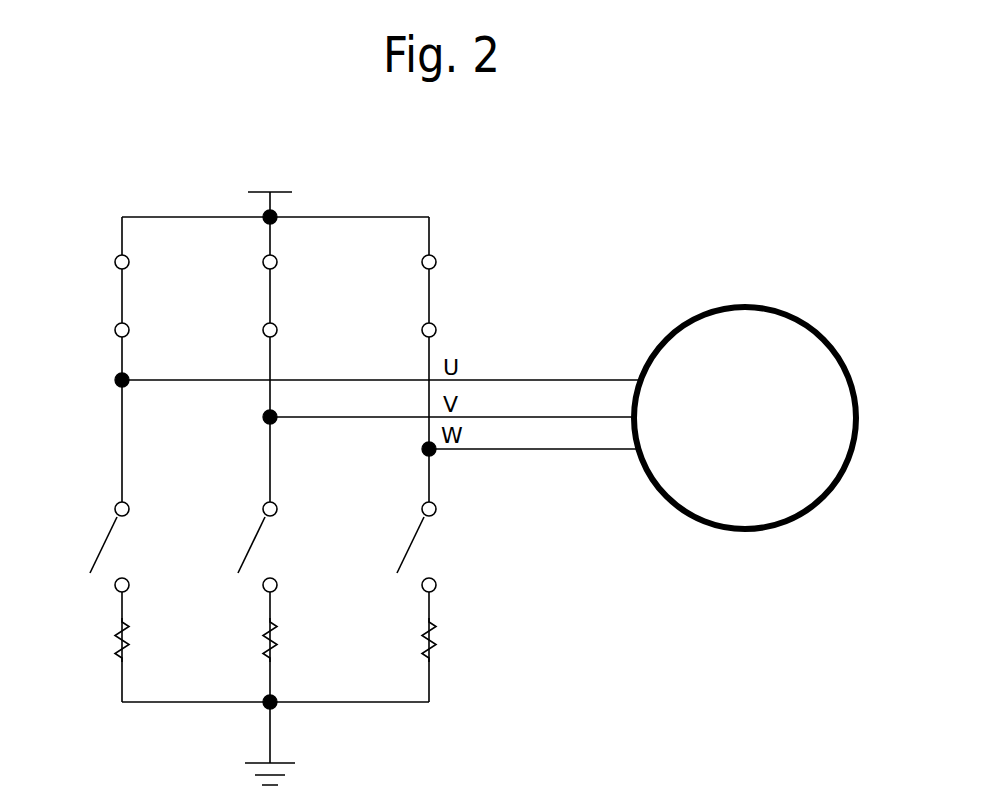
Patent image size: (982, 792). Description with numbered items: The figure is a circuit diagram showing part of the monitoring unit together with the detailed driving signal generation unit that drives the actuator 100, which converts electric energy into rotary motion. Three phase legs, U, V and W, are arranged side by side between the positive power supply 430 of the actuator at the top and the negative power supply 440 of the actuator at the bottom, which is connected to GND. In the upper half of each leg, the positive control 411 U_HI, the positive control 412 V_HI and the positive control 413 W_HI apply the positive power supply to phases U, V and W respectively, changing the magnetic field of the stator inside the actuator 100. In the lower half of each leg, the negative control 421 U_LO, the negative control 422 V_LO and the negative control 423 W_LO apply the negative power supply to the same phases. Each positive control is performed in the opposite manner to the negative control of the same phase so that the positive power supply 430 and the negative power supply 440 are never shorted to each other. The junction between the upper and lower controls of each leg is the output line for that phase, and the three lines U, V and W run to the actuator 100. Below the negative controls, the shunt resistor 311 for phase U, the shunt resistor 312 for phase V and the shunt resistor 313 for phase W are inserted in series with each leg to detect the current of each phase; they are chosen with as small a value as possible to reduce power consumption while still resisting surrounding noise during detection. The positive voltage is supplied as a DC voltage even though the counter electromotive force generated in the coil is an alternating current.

The actuator 100 is at (738, 307).
The shunt resistor for the phase U 311 is at (118, 660).
The shunt resistor for the phase V 312 is at (270, 658).
The shunt resistor for the phase W 313 is at (429, 658).
The positive control U_HI 411 is at (122, 297).
The positive control V_HI 412 is at (270, 297).
The positive control W_HI 413 is at (429, 297).
The negative control U_LO 421 is at (103, 545).
The negative control V_LO 422 is at (253, 545).
The negative control W_LO 423 is at (410, 545).
The positive power supply of the actuator 430 is at (270, 192).
The negative power supply of the actuator 440 is at (285, 763).